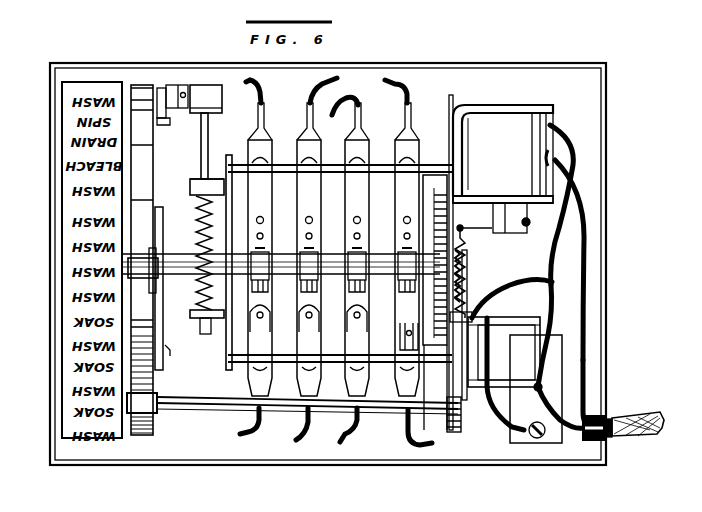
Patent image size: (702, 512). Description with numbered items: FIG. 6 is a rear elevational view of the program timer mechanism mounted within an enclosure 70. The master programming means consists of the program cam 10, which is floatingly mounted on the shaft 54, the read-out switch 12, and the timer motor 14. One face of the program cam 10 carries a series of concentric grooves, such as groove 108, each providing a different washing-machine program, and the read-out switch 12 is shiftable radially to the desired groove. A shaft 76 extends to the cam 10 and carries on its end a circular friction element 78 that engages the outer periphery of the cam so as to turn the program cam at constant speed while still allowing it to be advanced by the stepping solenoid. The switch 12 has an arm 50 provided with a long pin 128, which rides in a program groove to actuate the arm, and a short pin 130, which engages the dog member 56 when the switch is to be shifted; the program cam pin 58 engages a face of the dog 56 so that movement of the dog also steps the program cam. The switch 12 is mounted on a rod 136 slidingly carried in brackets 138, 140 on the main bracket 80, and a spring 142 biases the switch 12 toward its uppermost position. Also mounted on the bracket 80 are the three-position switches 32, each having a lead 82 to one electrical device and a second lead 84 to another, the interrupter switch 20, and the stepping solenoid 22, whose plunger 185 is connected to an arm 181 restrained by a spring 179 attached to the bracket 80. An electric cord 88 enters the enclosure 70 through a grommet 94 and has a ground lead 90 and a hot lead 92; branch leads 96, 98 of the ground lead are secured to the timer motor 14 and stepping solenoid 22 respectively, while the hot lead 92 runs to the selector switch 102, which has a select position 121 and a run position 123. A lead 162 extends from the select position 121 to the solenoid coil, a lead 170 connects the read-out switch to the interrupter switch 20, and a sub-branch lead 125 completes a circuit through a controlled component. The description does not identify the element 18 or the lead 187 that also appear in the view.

The program cam 10 is at (150, 430).
The read-out switch 12 is at (222, 100).
The timer motor 14 is at (534, 316).
The gear rack 18 is at (445, 263).
The interrupter switch 20 is at (404, 219).
The stepping solenoid 22 is at (527, 108).
The three-position switch 32 is at (270, 330).
The arm 50 is at (180, 109).
The shaft 54 is at (176, 278).
The dog member 56 is at (179, 355).
The program cam pin 58 is at (190, 188).
The enclosure 70 is at (565, 63).
The shaft 76 is at (226, 398).
The friction drive wheel 78 is at (160, 392).
The main bracket 80 is at (226, 356).
The lead 82 is at (268, 88).
The second lead 84 is at (244, 431).
The electric cord 88 is at (654, 410).
The ground lead 90 is at (586, 381).
The hot lead 92 is at (582, 438).
The grommet 94 is at (606, 442).
The branch lead 96 is at (512, 288).
The branch lead 98 is at (578, 260).
The selector switch 102 is at (510, 444).
The program cam groove 108 is at (540, 384).
The select position 121 is at (552, 345).
The run position 123 is at (537, 422).
The sub-branch lead 125 is at (500, 424).
The long pin 128 is at (162, 86).
The short pin 130 is at (168, 126).
The rod 136 is at (208, 148).
The bracket 138 is at (196, 180).
The bracket 140 is at (210, 326).
The spring 142 is at (196, 222).
The lead 162 is at (568, 133).
The lead 170 is at (410, 432).
The spring 179 is at (466, 268).
The arm 181 is at (478, 232).
The plunger 185 is at (527, 216).
The lead wire 187 is at (392, 86).